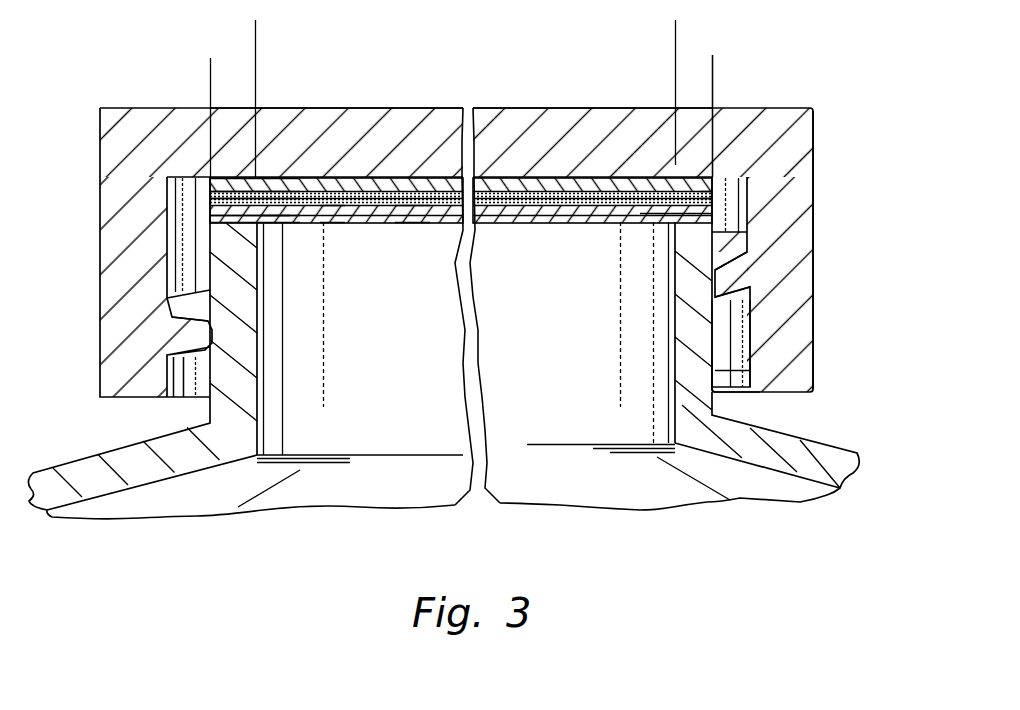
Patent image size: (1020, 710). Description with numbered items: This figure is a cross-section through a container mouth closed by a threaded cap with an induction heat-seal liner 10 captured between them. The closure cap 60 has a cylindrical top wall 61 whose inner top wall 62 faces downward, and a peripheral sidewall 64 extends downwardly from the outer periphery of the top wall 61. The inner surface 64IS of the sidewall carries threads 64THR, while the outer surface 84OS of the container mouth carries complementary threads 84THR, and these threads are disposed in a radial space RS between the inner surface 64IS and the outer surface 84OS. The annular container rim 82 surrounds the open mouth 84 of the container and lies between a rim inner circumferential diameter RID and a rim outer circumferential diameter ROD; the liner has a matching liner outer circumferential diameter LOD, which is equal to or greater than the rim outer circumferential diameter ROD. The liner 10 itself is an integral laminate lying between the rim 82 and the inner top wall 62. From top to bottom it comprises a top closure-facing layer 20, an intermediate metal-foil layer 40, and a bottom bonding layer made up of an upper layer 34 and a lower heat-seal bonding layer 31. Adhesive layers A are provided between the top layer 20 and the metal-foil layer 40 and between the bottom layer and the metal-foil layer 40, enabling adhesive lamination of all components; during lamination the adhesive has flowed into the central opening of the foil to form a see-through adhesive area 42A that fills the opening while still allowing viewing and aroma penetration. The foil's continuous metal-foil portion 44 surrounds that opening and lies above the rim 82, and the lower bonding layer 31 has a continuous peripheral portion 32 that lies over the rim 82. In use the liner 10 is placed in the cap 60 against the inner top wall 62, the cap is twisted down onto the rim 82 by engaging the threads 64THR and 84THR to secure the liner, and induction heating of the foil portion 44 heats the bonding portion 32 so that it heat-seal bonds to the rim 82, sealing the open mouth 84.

The induction heat-seal liner 10 is at (435, 172).
The top closure-facing layer 20 is at (215, 185).
The intermediate metal-foil layer 40 is at (213, 195).
The upper layer 34 is at (213, 199).
The lower heat-seal bonding layer 31 is at (213, 216).
The heat-seal bonding area 32 is at (213, 221).
The continuous metal-foil portion 44 is at (330, 225).
The adhesive area 42A is at (410, 224).
The container rim 82 is at (275, 218).
The top wall 61 is at (263, 110).
The inner top wall 62 is at (511, 178).
The peripheral sidewall 64 is at (815, 126).
The closure cap 60 is at (818, 166).
The open mouth 84 is at (520, 337).
The container mouth threads 84THR is at (730, 253).
The cap sidewall threads 64THR is at (718, 282).
The inner surface of the cap sidewall 64IS is at (740, 350).
The outer surface of the container mouth 84OS is at (715, 370).
The radial space RS is at (727, 392).
The adhesive layers A is at (350, 195).
The rim inner circumferential diameter RID is at (205, 32).
The rim outer circumferential diameter ROD is at (160, 68).
The liner outer circumferential diameter LOD is at (713, 68).